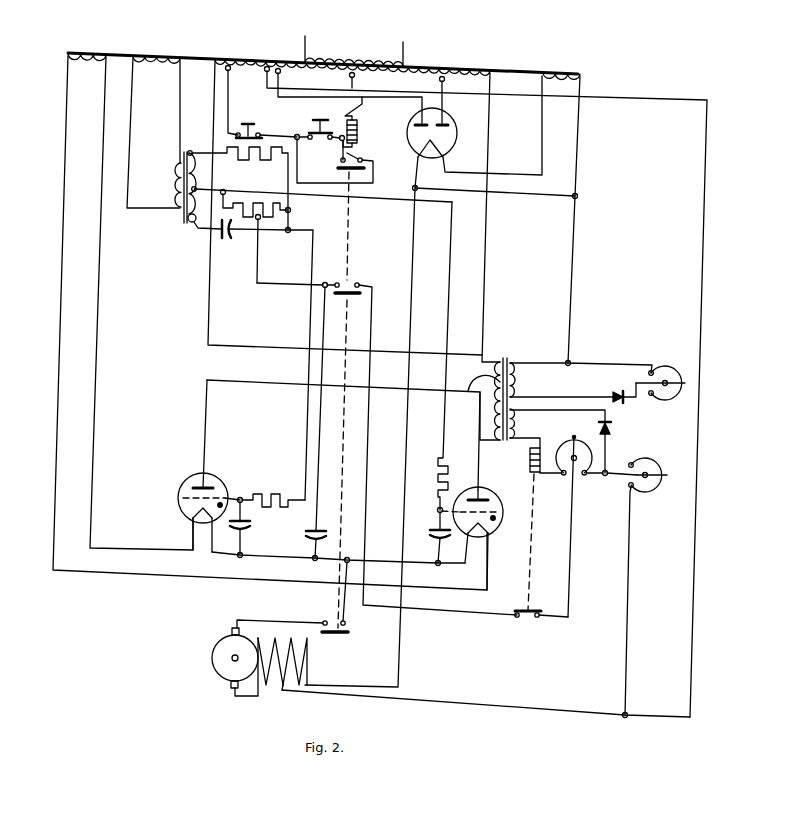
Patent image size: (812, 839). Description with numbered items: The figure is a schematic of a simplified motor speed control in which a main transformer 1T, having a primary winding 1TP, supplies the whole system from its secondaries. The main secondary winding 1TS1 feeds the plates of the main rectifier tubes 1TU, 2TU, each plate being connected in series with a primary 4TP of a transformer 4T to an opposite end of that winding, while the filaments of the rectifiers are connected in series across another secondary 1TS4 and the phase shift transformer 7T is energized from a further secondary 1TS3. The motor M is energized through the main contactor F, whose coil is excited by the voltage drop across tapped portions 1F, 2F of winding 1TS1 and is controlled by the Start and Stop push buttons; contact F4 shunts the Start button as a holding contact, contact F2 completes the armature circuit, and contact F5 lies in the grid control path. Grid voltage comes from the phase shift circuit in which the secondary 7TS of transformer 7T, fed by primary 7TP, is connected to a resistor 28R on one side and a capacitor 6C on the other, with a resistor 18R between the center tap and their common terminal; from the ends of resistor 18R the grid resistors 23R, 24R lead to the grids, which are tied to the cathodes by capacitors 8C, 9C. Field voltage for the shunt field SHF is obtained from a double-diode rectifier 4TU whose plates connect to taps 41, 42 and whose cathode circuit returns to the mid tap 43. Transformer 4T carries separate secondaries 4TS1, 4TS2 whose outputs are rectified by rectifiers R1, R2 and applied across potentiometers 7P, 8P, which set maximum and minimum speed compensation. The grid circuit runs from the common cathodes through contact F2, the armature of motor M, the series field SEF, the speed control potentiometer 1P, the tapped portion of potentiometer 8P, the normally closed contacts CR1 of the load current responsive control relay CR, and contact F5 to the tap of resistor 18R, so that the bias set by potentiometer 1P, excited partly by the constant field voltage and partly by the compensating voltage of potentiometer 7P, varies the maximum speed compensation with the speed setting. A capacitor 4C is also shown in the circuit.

The main transformer 1T is at (432, 52).
The primary winding 1TP is at (338, 51).
The main secondary winding 1TS1 is at (540, 81).
The secondary winding 1TS3 is at (156, 73).
The secondary winding 1TS4 is at (65, 65).
The tapped portion 1F is at (235, 101).
The tapped portion 2F is at (349, 96).
The tap 41 is at (266, 72).
The tap 42 is at (443, 81).
The mid tap 43 is at (342, 82).
The double-diode rectifier 4TU is at (458, 117).
The Stop push button Stop is at (265, 123).
The Start push button Start is at (320, 123).
The main contactor F is at (372, 133).
The contact F4 is at (357, 165).
The contact F5 is at (351, 288).
The normally open contact F2 is at (332, 622).
The transformer 7T is at (205, 152).
The primary winding 7TP is at (163, 185).
The secondary winding 7TS is at (195, 199).
The resistor 28R is at (249, 160).
The resistor 18R is at (266, 203).
The capacitor 6C is at (229, 239).
The transformer 4T is at (514, 353).
The primary winding 4TP is at (477, 401).
The secondary winding 4TS1 is at (511, 381).
The secondary winding 4TS2 is at (513, 416).
The rectifier R1 is at (621, 387).
The rectifier R2 is at (609, 444).
The potentiometer 7P is at (674, 369).
The potentiometer 8P is at (566, 430).
The speed control potentiometer 1P is at (658, 466).
The control relay CR is at (519, 463).
The normally closed contacts CR1 is at (541, 606).
The grid resistor 24R is at (441, 474).
The capacitor 9C is at (434, 531).
The main rectifier tube 2TU is at (492, 495).
The main rectifier tube 1TU is at (213, 483).
The grid resistor 23R is at (272, 493).
The capacitor 8C is at (250, 524).
The capacitor 4C is at (305, 537).
The direct current motor M is at (216, 637).
The series field winding SEF is at (276, 640).
The shunt field winding SHF is at (303, 656).